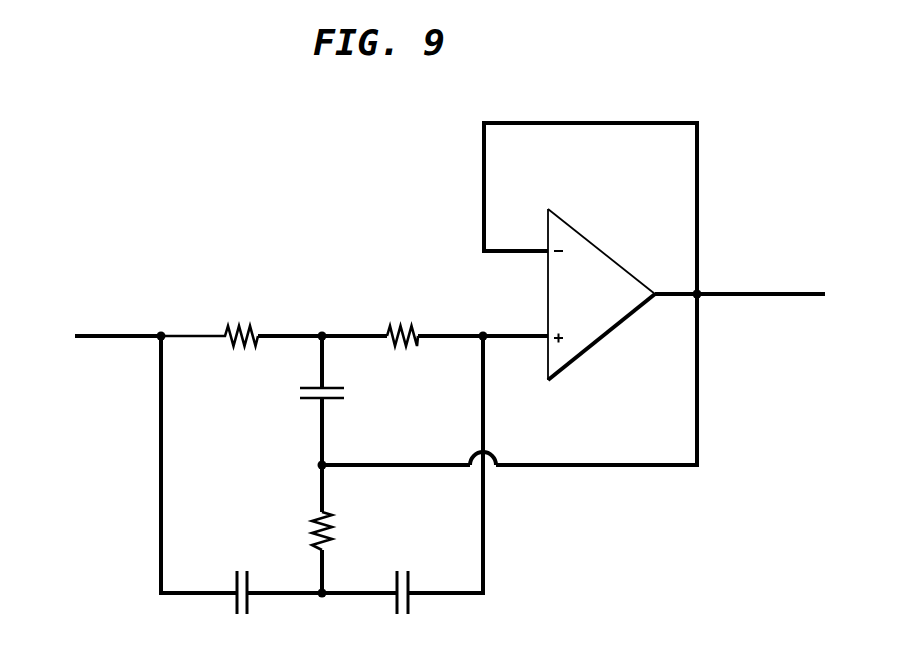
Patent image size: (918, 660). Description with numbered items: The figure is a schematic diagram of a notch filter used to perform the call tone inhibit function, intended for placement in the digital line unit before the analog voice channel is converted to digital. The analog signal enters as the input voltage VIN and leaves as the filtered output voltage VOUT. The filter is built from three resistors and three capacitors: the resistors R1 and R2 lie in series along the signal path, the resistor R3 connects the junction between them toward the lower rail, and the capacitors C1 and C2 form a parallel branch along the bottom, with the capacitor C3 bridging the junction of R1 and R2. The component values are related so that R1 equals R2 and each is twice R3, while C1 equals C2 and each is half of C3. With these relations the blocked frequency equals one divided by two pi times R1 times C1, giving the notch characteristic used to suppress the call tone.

The input voltage VIN is at (95, 329).
The output voltage VOUT is at (766, 302).
The resistor R1 is at (209, 312).
The resistor R2 is at (402, 312).
The resistor R3 is at (337, 535).
The capacitor C1 is at (238, 569).
The capacitor C2 is at (403, 567).
The capacitor C3 is at (304, 388).